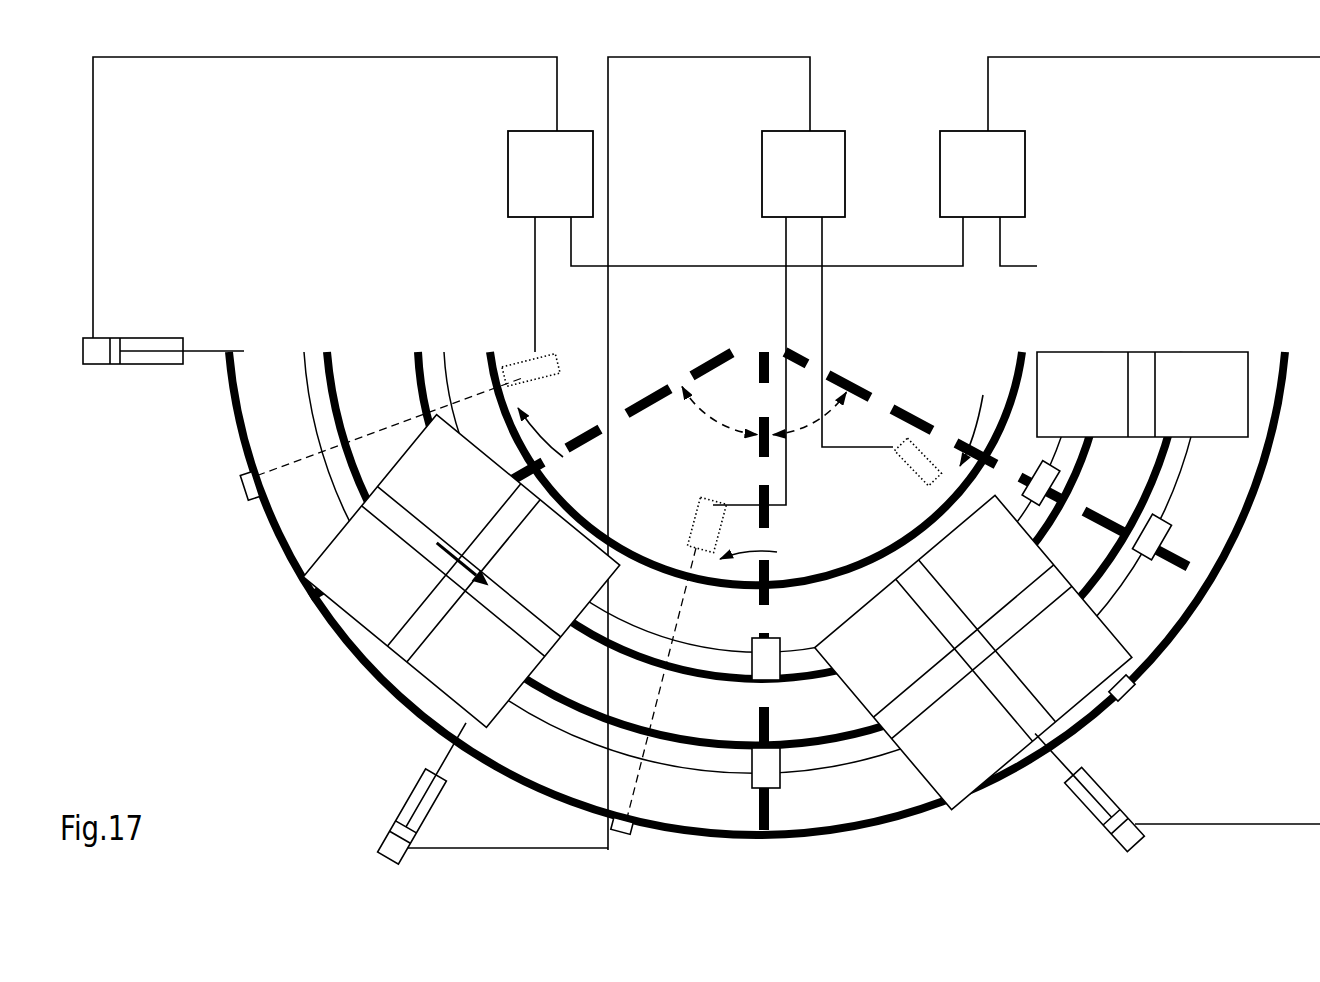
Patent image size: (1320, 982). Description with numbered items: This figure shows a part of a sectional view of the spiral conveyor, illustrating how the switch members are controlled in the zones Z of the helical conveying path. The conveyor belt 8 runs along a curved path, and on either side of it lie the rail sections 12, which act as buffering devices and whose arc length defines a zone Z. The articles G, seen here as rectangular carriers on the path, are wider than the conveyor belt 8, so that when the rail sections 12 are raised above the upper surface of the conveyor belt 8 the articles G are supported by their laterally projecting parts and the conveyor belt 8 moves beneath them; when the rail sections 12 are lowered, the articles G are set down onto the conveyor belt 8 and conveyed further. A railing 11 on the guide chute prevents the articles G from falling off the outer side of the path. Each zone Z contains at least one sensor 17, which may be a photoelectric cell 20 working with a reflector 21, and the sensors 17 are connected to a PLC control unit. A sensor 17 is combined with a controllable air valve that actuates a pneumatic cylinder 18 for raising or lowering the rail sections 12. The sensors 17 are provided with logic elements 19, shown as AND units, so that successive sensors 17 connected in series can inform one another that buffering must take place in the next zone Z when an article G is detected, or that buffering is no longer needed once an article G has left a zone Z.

The conveyor belt 8 is at (715, 593).
The railing 11 is at (257, 507).
The rail sections 12 is at (313, 420).
The sensor 17 is at (757, 465).
The pneumatic cylinder 18 is at (137, 366).
The logic elements 19 is at (568, 142).
The photoelectric cell 20 is at (703, 538).
The reflector 21 is at (240, 478).
The articles G is at (375, 607).
The zones Z is at (764, 426).